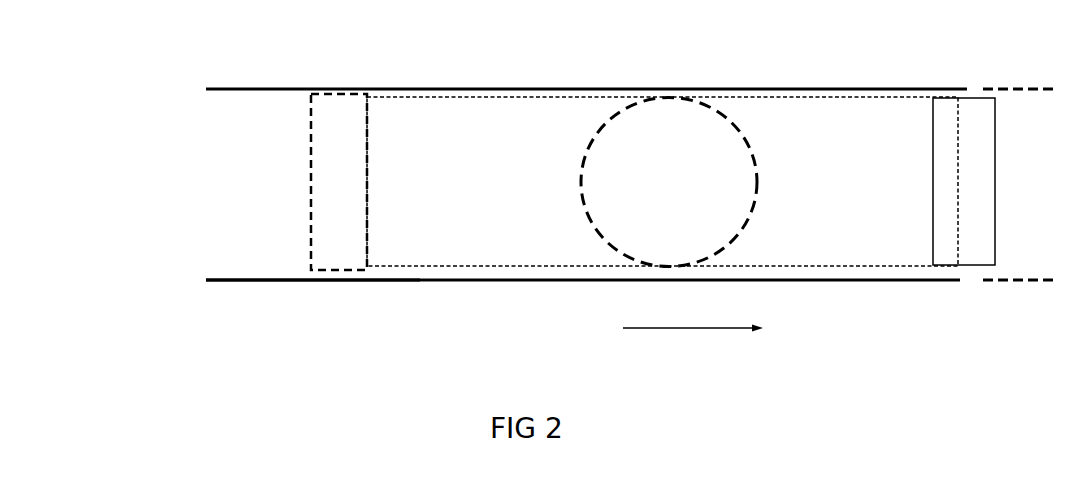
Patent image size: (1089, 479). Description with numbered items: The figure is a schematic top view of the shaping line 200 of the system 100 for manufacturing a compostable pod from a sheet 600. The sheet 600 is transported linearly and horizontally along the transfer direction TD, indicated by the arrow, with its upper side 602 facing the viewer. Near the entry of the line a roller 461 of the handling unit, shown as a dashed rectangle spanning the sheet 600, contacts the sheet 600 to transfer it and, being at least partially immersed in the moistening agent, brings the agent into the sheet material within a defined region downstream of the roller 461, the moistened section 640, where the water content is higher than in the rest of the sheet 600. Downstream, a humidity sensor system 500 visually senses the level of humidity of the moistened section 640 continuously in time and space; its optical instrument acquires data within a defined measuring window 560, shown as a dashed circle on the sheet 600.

The system 100 is at (81, 111).
The shaping line 200 is at (93, 148).
The roller 461 is at (338, 177).
The humidity sensor system 500 is at (592, 112).
The measuring window 560 is at (722, 188).
The sheet 600 is at (232, 241).
The upper side 602 is at (256, 264).
The moistened section 640 is at (507, 181).